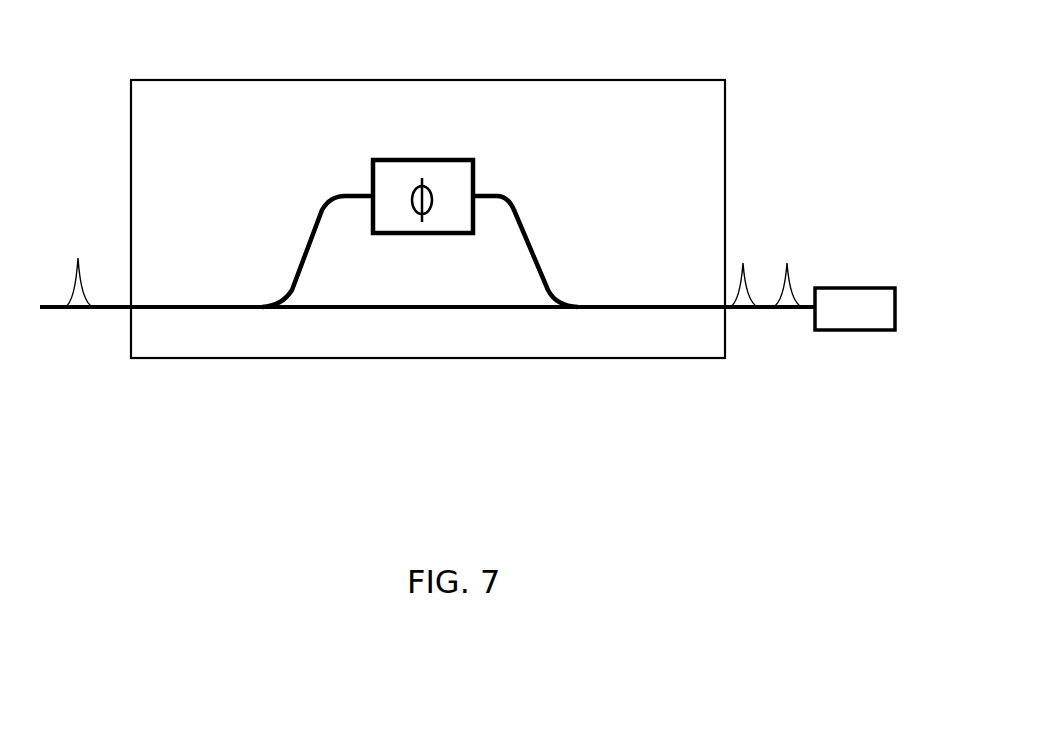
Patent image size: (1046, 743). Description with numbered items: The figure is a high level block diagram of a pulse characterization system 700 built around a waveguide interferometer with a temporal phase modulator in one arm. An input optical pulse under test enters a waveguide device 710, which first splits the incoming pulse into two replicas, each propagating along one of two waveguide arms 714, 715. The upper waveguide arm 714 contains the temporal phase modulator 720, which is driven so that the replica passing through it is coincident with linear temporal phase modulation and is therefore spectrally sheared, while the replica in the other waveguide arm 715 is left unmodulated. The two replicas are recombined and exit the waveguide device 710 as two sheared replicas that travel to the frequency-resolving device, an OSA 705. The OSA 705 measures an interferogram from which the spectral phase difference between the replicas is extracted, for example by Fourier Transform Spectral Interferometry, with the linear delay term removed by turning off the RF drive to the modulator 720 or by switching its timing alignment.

The pulse characterization system 700 is at (749, 485).
The frequency-resolving device (OSA) 705 is at (838, 330).
The waveguide device 710 is at (608, 80).
The upper waveguide arm 714 is at (308, 238).
The waveguide arm 715 is at (331, 311).
The temporal phase modulator 720 is at (442, 160).